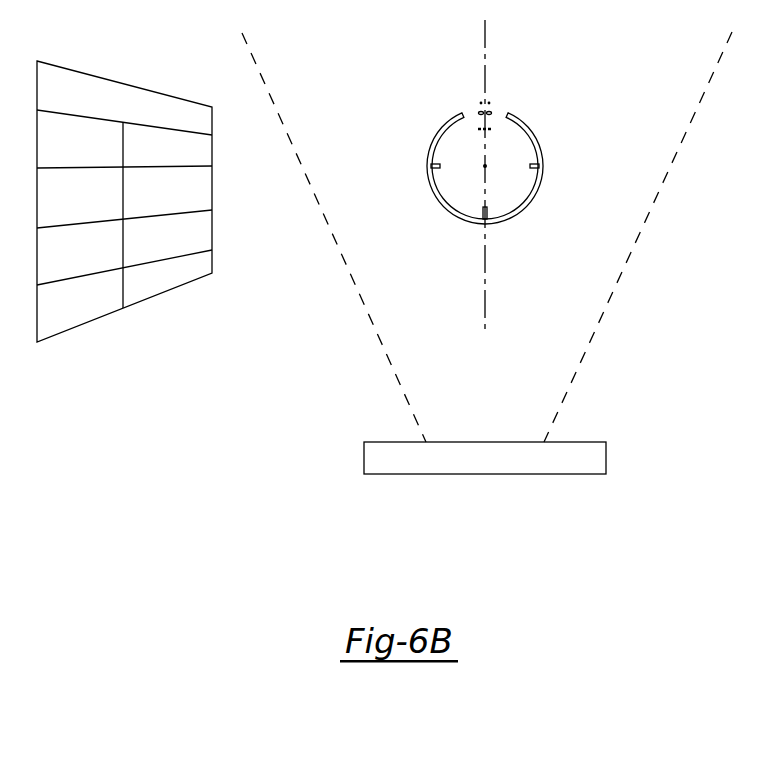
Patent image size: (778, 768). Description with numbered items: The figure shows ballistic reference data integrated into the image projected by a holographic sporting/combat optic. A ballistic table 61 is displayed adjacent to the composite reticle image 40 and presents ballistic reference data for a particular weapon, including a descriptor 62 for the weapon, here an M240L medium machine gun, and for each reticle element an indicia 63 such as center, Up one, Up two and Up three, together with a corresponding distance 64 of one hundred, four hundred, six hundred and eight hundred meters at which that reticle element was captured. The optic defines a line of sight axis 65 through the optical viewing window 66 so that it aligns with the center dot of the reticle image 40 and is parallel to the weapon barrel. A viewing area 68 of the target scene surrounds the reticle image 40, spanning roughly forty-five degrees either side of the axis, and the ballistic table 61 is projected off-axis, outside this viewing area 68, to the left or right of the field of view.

The ballistic table 61 is at (171, 297).
The descriptor 62 is at (196, 109).
The indicia for the given reticle element 63 is at (55, 190).
The corresponding distance 64 is at (212, 238).
The line of sight axis 65 is at (486, 36).
The reticle image 40 is at (571, 105).
The optical viewing window 66 is at (606, 458).
The viewing area 68 is at (327, 76).